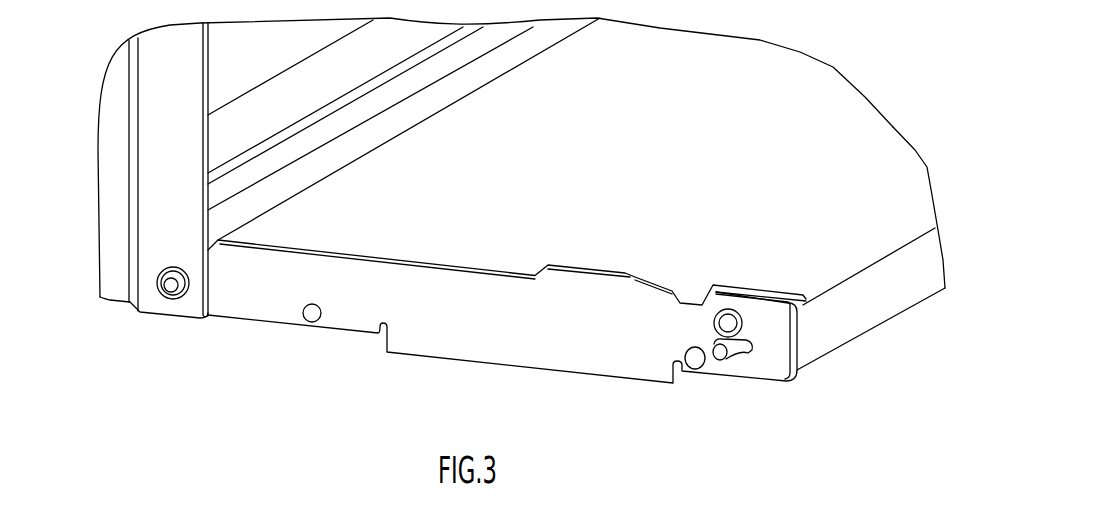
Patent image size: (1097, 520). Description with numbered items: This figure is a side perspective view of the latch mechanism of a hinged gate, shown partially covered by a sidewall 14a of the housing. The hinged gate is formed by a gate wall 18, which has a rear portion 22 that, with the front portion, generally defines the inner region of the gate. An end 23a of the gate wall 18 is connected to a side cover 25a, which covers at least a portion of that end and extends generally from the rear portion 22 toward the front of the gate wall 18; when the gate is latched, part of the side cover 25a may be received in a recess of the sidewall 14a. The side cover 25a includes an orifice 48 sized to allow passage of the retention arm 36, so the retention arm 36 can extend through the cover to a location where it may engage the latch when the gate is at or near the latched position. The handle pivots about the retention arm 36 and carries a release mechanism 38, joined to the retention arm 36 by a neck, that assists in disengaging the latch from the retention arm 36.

The sidewall 14a is at (113, 282).
The gate wall 18 is at (820, 82).
The rear portion 22 is at (898, 178).
The end of the gate wall 23a is at (287, 247).
The side cover 25a is at (524, 319).
The retention arm 36 is at (728, 323).
The release mechanism 38 is at (722, 353).
The orifice 48 is at (743, 357).